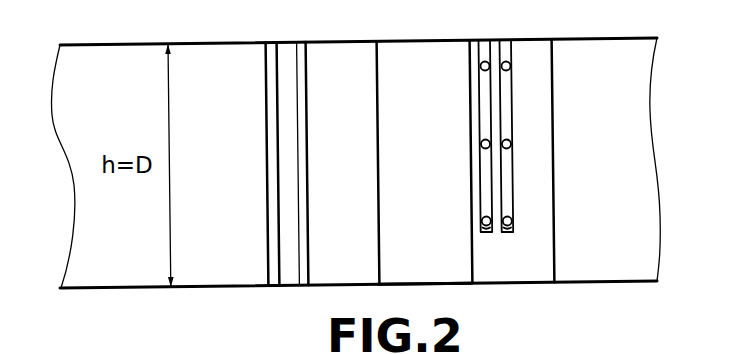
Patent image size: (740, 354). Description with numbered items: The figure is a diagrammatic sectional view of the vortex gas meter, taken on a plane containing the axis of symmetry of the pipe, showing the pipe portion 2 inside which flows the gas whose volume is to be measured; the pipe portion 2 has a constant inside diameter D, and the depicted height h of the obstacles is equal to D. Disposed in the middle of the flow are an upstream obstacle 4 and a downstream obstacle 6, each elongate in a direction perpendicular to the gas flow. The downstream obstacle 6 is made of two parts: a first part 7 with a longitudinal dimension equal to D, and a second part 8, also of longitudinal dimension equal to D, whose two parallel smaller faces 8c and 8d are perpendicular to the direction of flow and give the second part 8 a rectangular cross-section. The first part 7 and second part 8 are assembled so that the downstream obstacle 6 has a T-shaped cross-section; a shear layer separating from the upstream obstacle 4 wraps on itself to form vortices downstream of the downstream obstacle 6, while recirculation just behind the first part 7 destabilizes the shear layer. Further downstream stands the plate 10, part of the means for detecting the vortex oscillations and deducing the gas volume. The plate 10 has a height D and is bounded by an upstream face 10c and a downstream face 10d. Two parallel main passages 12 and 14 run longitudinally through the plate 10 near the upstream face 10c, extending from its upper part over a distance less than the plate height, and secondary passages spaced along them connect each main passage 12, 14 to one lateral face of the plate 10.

The pipe portion 2 is at (450, 41).
The upstream obstacle 4 is at (269, 268).
The downstream obstacle 6 is at (392, 123).
The first part of the downstream obstacle 7 is at (301, 210).
The second part of the downstream obstacle 8 is at (327, 169).
The smaller face of the second part 8c is at (304, 60).
The smaller face of the second part 8d is at (378, 58).
The plate 10 is at (517, 161).
The upstream face 10c is at (472, 243).
The downstream face 10d is at (553, 233).
The main passage 12 is at (483, 173).
The main passage 14 is at (505, 108).